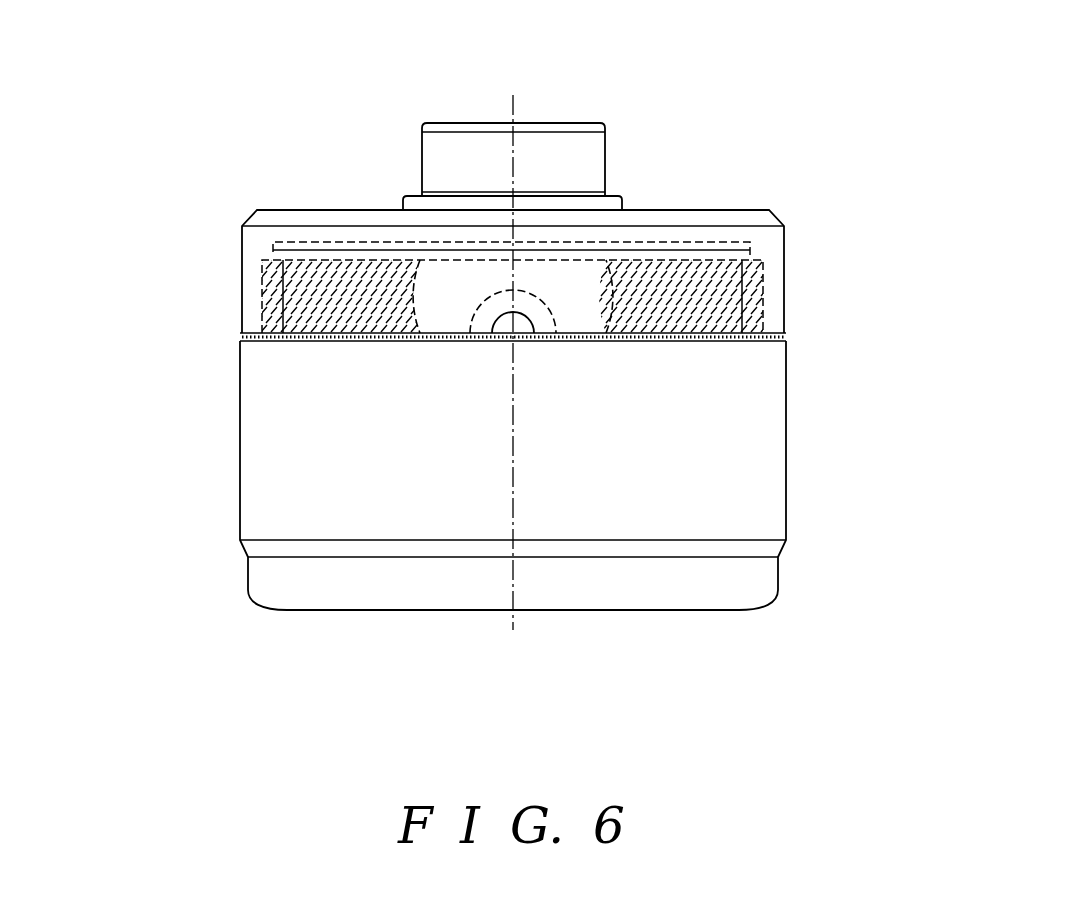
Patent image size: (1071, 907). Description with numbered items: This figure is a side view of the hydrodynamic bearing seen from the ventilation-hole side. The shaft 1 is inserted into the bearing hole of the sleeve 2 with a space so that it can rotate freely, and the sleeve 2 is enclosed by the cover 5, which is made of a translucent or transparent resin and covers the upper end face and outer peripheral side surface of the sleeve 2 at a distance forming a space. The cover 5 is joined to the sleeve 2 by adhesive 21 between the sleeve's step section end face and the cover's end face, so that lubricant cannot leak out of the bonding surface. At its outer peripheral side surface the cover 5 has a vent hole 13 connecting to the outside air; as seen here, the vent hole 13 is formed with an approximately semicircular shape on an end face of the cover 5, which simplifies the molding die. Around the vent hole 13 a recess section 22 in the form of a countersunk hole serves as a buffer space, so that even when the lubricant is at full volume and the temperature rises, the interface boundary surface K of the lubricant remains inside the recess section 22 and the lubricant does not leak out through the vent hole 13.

The shaft 1 is at (448, 157).
The sleeve 2 is at (282, 448).
The cover 5 is at (763, 238).
The vent hole 13 is at (516, 326).
The adhesive 21 is at (237, 335).
The recess section 22 is at (525, 307).
The interface boundary surface K is at (410, 300).